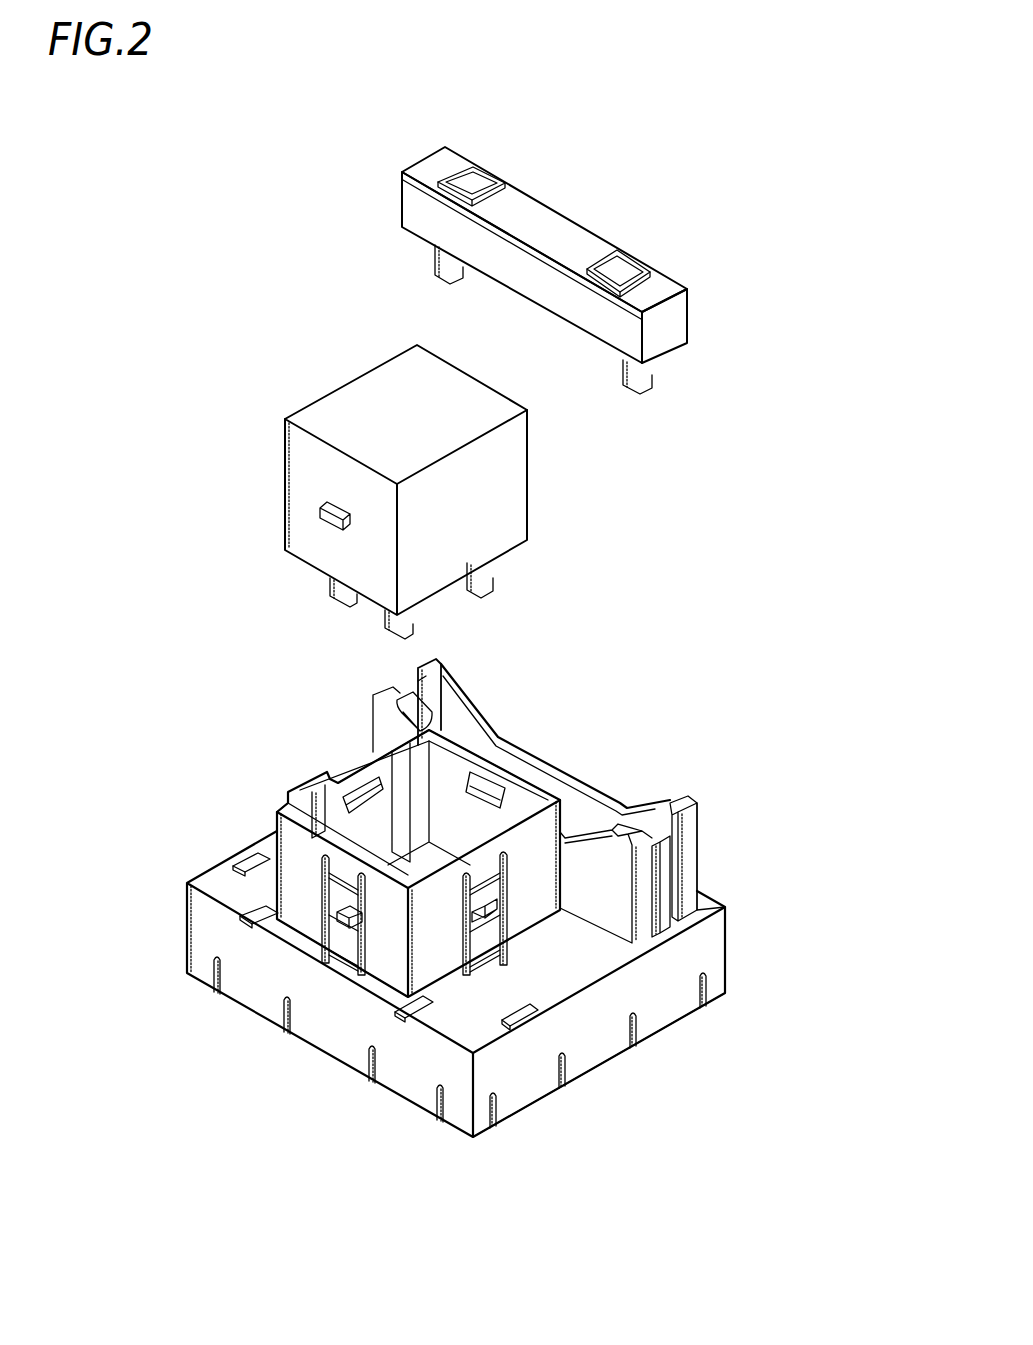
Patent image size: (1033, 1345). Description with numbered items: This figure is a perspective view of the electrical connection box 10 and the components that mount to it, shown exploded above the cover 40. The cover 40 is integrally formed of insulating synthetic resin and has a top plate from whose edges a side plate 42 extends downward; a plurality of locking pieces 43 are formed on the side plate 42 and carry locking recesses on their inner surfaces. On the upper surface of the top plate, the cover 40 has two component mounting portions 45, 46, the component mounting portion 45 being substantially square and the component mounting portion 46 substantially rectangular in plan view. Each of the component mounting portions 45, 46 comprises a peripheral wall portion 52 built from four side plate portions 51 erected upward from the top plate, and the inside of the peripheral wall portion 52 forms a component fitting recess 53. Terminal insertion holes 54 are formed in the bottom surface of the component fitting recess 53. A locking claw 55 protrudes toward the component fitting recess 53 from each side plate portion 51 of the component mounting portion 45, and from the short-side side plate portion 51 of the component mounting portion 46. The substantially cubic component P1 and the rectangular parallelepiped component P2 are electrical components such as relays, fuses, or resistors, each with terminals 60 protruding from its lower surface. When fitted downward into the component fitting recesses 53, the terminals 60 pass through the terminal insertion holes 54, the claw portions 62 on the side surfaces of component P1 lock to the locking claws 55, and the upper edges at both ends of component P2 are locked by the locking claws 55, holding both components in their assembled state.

The electrical connection box 10 is at (184, 682).
The cover 40 is at (184, 876).
The side plate 42 is at (727, 941).
The locking pieces 43 is at (238, 988).
The component mounting portion 45 is at (286, 779).
The component mounting portion 46 is at (590, 768).
The side plate portions 51 is at (283, 850).
The peripheral wall portion 52 is at (272, 822).
The component fitting recess 53 is at (612, 800).
The terminal insertion holes 54 is at (353, 923).
The locking claw 55 is at (428, 710).
The terminals 60 is at (432, 278).
The claw portions 62 is at (318, 515).
The component P1 is at (350, 413).
The component P2 is at (426, 152).